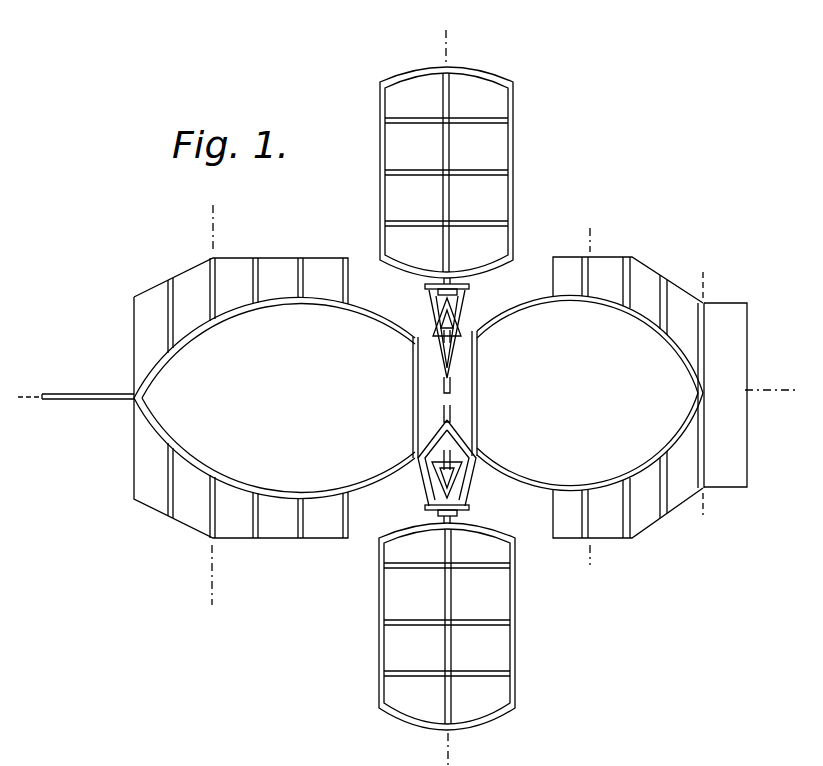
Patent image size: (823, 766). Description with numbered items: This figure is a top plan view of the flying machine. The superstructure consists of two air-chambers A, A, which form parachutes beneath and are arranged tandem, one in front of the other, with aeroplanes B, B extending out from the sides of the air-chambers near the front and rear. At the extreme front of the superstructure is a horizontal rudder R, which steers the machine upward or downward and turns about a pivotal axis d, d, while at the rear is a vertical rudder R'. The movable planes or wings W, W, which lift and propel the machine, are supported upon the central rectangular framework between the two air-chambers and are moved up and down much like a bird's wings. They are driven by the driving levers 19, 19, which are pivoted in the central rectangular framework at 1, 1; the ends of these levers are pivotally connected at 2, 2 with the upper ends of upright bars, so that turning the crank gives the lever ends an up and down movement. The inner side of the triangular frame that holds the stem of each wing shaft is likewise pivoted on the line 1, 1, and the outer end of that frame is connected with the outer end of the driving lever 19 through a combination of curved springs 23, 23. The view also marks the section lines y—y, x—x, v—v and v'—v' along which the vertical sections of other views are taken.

The movable planes or wings W is at (490, 148).
The air-chambers A is at (290, 345).
The aeroplanes B is at (658, 543).
The pivot line of driving levers 1 is at (407, 340).
The pivotal connection of upright bars 2 is at (450, 402).
The driving levers 19 is at (472, 323).
The curved springs 23 is at (425, 289).
The pivotal axis of horizontal rudder d is at (709, 393).
The horizontal rudder R is at (741, 396).
The vertical rudder R' is at (88, 413).
The section line x— x is at (404, 393).
The section line y— y is at (457, 392).
The section line v— v is at (600, 395).
The section line v'— v' is at (224, 409).